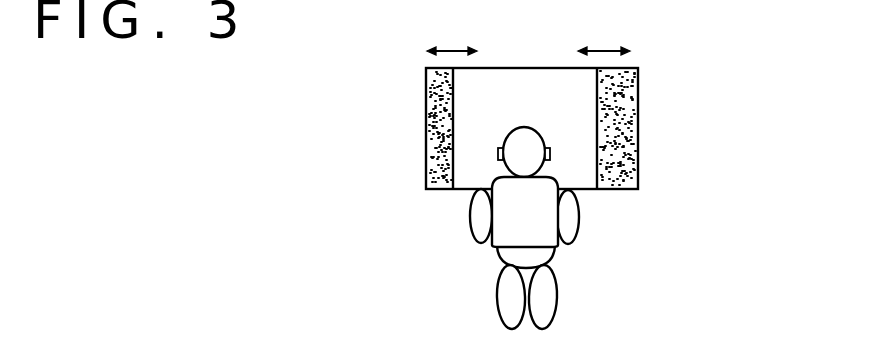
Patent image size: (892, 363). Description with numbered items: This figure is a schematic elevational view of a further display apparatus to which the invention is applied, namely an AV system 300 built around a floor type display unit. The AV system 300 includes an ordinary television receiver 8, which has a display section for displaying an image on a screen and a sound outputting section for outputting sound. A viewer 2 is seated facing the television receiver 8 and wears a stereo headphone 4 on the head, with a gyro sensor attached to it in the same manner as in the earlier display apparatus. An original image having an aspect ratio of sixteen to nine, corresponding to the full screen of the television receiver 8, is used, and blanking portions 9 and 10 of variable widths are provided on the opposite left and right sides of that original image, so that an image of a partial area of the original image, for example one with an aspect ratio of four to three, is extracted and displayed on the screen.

The AV system 300 is at (747, 47).
The television receiver 8 is at (527, 66).
The blanking portion 9 is at (426, 128).
The blanking portion 10 is at (638, 135).
The stereo headphone 4 is at (498, 155).
The viewer 2 is at (547, 225).